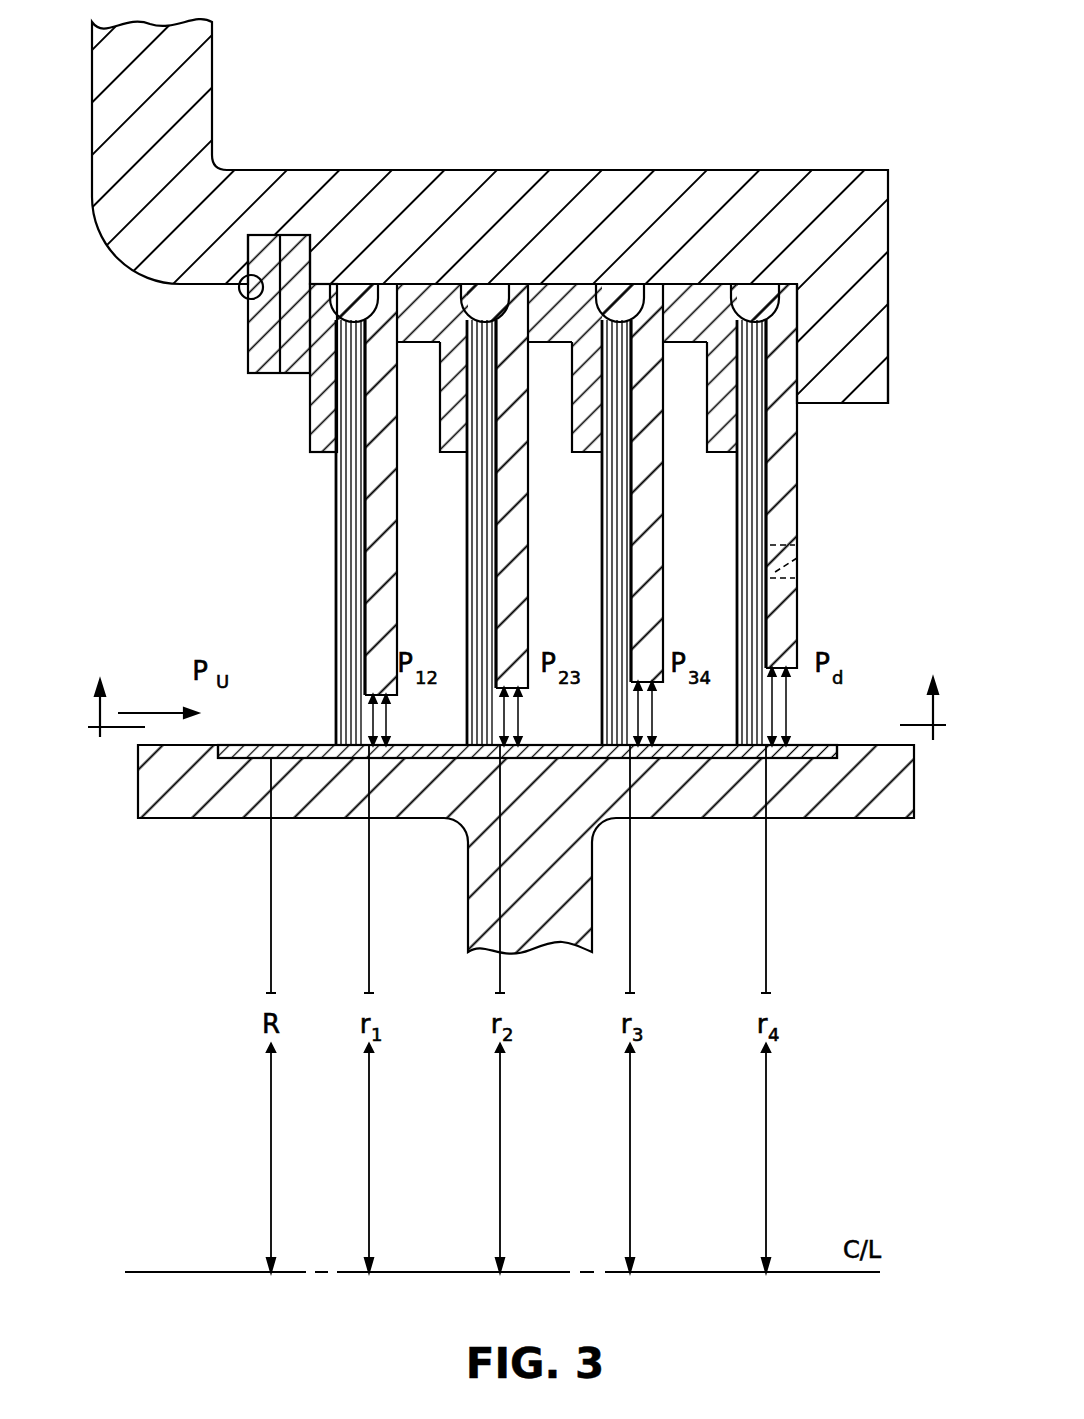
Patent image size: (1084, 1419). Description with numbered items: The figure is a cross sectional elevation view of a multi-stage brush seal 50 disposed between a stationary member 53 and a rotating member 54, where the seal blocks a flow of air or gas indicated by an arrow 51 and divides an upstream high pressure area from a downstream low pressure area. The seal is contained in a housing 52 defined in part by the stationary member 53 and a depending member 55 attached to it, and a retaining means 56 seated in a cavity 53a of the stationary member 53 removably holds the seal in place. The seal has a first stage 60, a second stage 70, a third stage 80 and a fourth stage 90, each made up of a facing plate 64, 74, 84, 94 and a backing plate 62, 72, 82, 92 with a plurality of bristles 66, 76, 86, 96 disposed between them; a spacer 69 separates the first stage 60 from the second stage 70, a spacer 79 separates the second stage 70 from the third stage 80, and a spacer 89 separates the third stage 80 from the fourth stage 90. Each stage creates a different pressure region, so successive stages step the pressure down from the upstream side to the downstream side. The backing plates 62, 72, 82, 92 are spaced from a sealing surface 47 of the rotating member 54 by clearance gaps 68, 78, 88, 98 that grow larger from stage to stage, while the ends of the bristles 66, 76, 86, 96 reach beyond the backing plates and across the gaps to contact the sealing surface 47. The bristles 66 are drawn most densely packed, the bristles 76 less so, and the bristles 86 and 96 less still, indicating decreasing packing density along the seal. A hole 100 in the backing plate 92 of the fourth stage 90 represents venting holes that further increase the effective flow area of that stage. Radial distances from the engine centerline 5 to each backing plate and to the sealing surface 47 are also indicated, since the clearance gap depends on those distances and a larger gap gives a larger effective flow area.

The centerline 5 is at (517, 726).
The sealing surface 47 is at (273, 740).
The brush seal 50 is at (856, 486).
The arrow 51 is at (145, 713).
The housing 52 is at (801, 128).
The stationary member 53 is at (638, 172).
The cavity 53a is at (247, 300).
The rotating member 54 is at (858, 760).
The depending member 55 is at (852, 403).
The retaining means 56 is at (236, 343).
The first stage 60 is at (324, 514).
The backing plate 62 is at (392, 637).
The facing plate 64 is at (310, 418).
The bristles 66 is at (335, 625).
The clearance gap 68 is at (388, 713).
The spacer 69 is at (422, 342).
The second stage 70 is at (493, 514).
The backing plate 72 is at (527, 645).
The facing plate 74 is at (443, 437).
The bristles 76 is at (467, 670).
The clearance gap 78 is at (520, 713).
The spacer 79 is at (547, 344).
The third stage 80 is at (628, 514).
The backing plate 82 is at (663, 650).
The facing plate 84 is at (575, 438).
The bristles 86 is at (602, 598).
The clearance gap 88 is at (655, 713).
The spacer 89 is at (684, 344).
The fourth stage 90 is at (777, 514).
The backing plate 92 is at (788, 643).
The facing plate 94 is at (708, 430).
The bristles 96 is at (737, 600).
The clearance gap 98 is at (790, 708).
The hole 100 is at (797, 558).